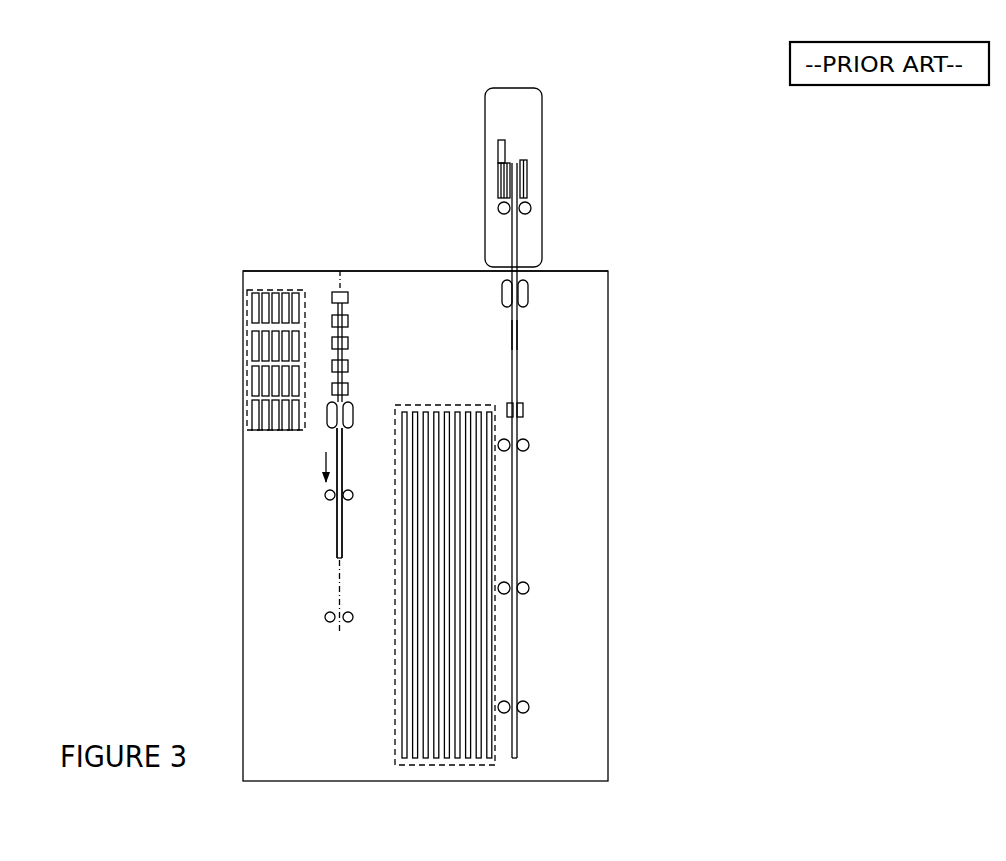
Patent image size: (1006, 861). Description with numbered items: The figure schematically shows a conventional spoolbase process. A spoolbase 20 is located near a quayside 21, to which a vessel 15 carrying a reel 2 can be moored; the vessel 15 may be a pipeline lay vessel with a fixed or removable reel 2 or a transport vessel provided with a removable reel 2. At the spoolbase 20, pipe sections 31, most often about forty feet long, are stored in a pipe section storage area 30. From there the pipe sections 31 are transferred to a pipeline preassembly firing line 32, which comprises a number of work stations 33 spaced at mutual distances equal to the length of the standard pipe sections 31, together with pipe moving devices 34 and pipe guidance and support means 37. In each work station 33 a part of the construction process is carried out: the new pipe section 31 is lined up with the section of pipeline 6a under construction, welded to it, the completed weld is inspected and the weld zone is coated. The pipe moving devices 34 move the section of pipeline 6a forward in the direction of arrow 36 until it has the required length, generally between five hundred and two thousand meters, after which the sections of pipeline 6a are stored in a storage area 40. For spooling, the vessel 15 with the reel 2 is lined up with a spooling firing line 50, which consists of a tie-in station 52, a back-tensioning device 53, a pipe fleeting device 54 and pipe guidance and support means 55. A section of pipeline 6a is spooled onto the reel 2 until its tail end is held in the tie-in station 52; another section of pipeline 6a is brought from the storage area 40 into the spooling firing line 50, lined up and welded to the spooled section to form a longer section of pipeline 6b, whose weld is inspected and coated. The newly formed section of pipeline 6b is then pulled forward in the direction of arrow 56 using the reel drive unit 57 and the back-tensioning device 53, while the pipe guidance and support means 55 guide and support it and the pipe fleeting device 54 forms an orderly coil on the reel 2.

The reel 2 is at (530, 178).
The section of pipeline 6a is at (519, 250).
The longer section of pipeline 6b is at (552, 408).
The vessel 15 is at (543, 127).
The spoolbase 20 is at (262, 642).
The quayside 21 is at (389, 270).
The pipe section storage area 30 is at (245, 330).
The pipe section 31 is at (252, 305).
The pipeline preassembly firing line 32 is at (338, 585).
The work station 33 is at (348, 321).
The pipe moving device 34 is at (354, 412).
The arrow 36 is at (323, 460).
The pipe guidance and support means 37 is at (324, 614).
The storage area 40 is at (395, 737).
The spooling firing line 50 is at (516, 771).
The tie-in station 52 is at (524, 407).
The back-tensioning device 53 is at (530, 291).
The pipe fleeting device 54 is at (532, 208).
The pipe guidance and support means 55 is at (531, 445).
The arrow 56 is at (510, 333).
The reel drive unit 57 is at (497, 150).